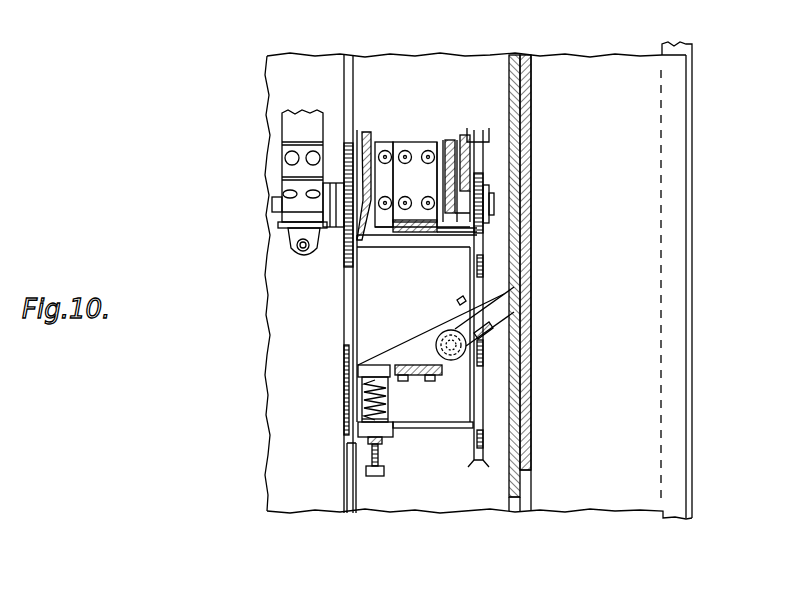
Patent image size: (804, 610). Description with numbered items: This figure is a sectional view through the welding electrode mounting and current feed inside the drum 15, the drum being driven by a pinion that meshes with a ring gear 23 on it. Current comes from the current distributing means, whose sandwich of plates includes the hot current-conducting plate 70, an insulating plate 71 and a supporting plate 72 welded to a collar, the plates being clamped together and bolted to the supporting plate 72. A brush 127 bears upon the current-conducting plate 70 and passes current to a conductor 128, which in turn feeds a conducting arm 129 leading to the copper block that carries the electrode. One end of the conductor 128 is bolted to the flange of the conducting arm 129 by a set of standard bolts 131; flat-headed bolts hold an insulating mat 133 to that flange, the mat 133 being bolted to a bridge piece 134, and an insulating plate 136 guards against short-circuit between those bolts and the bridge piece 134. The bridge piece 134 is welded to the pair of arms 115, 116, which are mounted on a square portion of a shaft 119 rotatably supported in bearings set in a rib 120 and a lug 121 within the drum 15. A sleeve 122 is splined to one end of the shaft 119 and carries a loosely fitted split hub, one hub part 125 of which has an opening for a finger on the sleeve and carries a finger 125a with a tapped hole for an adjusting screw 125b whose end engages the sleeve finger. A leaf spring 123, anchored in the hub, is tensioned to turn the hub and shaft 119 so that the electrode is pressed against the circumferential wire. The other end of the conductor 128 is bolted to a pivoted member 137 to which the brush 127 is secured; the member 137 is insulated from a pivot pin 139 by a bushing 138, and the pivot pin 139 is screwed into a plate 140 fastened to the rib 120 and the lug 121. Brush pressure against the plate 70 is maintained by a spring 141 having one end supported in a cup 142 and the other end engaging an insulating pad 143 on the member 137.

The drum 15 is at (597, 52).
The ring gear 23 is at (686, 44).
The current-conducting plate 70 is at (517, 378).
The insulating plate 71 is at (523, 396).
The supporting plate 72 is at (529, 414).
The arm 115 is at (366, 138).
The arm 116 is at (468, 137).
The shaft 119 is at (494, 208).
The rib 120 is at (346, 102).
The lug 121 is at (476, 160).
The sleeve 122 is at (331, 229).
The leaf spring 123 is at (282, 131).
The hub part 125 is at (288, 239).
The finger 125a is at (300, 249).
The adjusting screw 125b is at (298, 246).
The brush 127 is at (511, 301).
The conductor 128 is at (412, 140).
The conducting arm 129 is at (449, 139).
The standard bolts 131 is at (430, 150).
The insulating mat 133 is at (468, 231).
The bridge piece 134 is at (375, 145).
The insulating plate 136 is at (452, 236).
The pivoted member 137 is at (402, 350).
The bushing 138 is at (445, 328).
The pivot pin 139 is at (452, 362).
The plate 140 is at (423, 429).
The spring 141 is at (363, 394).
The cup 142 is at (372, 418).
The insulating pad 143 is at (366, 372).